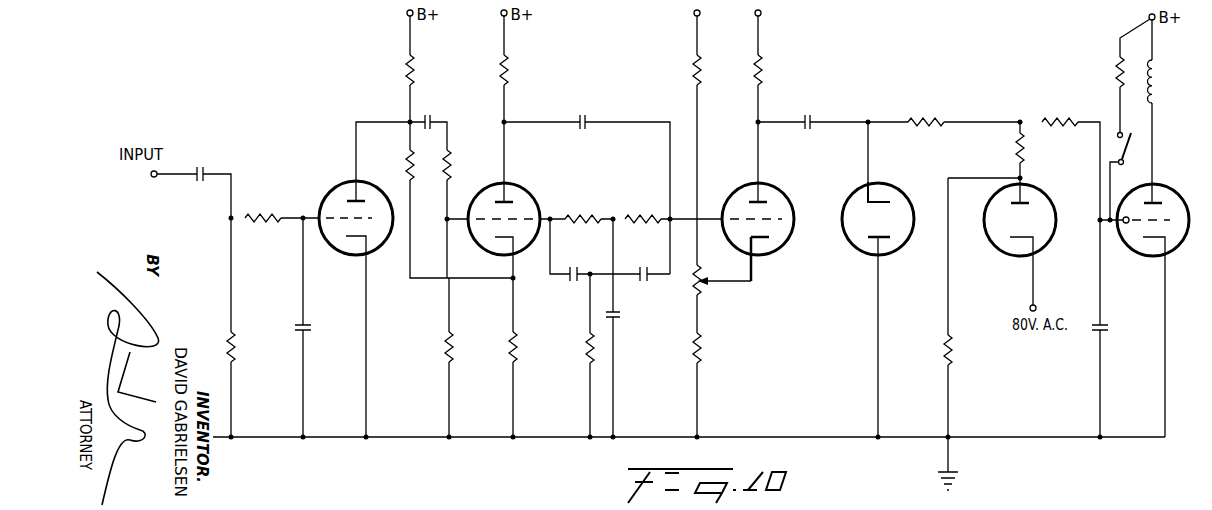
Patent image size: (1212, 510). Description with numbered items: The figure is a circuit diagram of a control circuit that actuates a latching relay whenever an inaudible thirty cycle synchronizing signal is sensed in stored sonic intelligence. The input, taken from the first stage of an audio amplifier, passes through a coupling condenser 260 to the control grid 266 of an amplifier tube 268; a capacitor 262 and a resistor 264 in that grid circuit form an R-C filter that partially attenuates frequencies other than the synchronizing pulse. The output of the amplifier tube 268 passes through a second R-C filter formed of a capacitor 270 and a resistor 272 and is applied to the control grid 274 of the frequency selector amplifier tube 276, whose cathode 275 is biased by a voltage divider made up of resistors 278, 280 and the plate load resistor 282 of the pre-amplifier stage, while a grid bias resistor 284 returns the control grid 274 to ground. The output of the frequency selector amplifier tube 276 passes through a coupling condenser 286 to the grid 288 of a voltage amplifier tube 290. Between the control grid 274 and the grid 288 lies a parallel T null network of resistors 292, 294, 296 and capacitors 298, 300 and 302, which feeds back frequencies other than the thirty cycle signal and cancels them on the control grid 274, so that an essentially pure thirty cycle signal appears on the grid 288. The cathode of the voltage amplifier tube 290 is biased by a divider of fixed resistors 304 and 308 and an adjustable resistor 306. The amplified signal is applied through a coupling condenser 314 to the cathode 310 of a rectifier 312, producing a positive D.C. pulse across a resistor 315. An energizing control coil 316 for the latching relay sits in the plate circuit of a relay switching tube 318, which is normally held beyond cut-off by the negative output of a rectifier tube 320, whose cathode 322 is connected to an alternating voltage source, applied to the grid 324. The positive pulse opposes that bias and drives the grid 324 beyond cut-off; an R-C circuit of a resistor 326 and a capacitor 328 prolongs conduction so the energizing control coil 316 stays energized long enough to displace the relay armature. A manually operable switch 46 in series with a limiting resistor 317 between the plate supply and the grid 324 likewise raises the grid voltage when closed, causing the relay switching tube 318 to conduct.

The coupling condenser 260 is at (202, 165).
The capacitor 262 is at (310, 324).
The resistor 264 is at (272, 208).
The control grid 266 is at (330, 216).
The amplifier tube 268 is at (373, 257).
The capacitor 270 is at (433, 113).
The resistor 272 is at (455, 173).
The control grid 274 is at (467, 228).
The cathode 275 is at (512, 242).
The frequency selector amplifier tube 276 is at (525, 192).
The resistor 278 is at (518, 348).
The resistor 280 is at (405, 166).
The plate load resistor 282 is at (405, 63).
The grid bias resistor 284 is at (445, 347).
The coupling condenser 286 is at (590, 118).
The grid 288 is at (714, 175).
The voltage amplifier tube 290 is at (792, 205).
The resistor 292 is at (594, 208).
The resistor 294 is at (648, 210).
The resistor 296 is at (583, 345).
The capacitor 298 is at (574, 268).
The capacitor 300 is at (648, 284).
The capacitor 302 is at (621, 323).
The fixed resistor 304 is at (692, 70).
The adjustable resistor 306 is at (700, 298).
The fixed resistor 308 is at (700, 355).
The cathode 310 is at (886, 200).
The rectifier 312 is at (846, 251).
The coupling condenser 314 is at (808, 115).
The resistor 315 is at (930, 118).
The energizing control coil 316 is at (1160, 85).
The limiting resistor 317 is at (1117, 70).
The relay switching tube 318 is at (1147, 253).
The rectifier tube 320 is at (1010, 248).
The cathode 322 is at (1026, 236).
The grid 324 is at (1121, 224).
The resistor 326 is at (1045, 118).
The capacitor 328 is at (1096, 333).
The manually operable switch 46 is at (1133, 147).